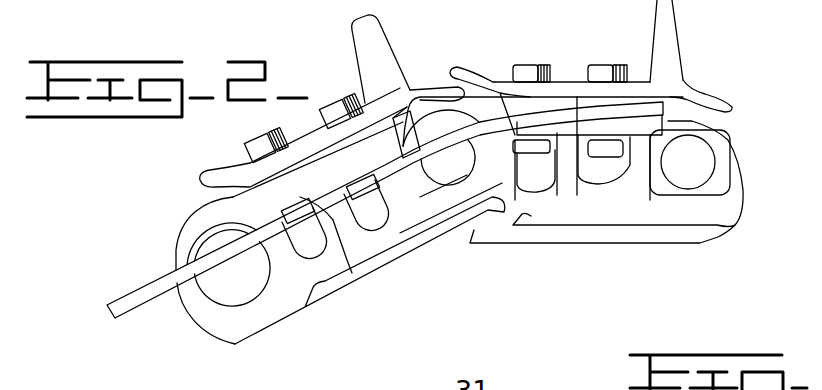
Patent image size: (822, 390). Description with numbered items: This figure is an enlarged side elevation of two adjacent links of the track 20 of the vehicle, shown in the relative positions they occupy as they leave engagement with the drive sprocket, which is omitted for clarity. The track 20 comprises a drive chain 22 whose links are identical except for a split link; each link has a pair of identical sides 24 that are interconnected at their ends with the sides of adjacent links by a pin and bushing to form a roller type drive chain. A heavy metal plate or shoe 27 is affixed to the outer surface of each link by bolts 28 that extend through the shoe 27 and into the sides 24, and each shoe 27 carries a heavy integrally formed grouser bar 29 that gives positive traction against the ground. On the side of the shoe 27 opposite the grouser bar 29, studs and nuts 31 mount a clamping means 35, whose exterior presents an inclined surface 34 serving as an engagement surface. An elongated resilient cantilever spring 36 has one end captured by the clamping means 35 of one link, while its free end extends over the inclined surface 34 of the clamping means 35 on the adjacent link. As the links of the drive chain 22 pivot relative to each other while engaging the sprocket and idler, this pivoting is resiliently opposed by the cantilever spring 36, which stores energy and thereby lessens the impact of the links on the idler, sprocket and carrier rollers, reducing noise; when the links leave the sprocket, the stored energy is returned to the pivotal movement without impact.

The track 20 is at (722, 66).
The drive chain 22 is at (226, 352).
The sides 24 is at (372, 255).
The shoes 27 is at (305, 150).
The bolts 28 is at (250, 155).
The grouser bar 29 is at (367, 40).
The nuts 31 is at (387, 193).
The inclined surface 34 is at (628, 177).
The clamping means 35 is at (418, 92).
The cantilever spring 36 is at (145, 290).